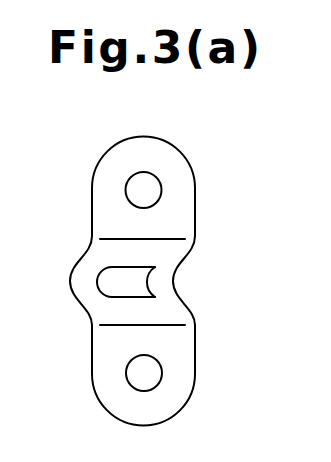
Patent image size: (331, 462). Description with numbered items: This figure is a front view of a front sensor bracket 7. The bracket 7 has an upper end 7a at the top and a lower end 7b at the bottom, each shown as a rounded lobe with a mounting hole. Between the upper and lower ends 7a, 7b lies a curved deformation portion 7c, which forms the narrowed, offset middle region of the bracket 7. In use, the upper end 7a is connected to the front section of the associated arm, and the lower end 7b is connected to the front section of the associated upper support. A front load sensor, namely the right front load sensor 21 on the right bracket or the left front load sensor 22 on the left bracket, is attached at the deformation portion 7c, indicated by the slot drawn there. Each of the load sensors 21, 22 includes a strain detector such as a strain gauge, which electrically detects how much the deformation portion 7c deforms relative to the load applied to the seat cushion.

The front sensor bracket 7 is at (163, 281).
The upper end 7a is at (196, 211).
The lower end 7b is at (196, 361).
The curved deformation portion 7c is at (80, 292).
The left front load sensor 22 is at (145, 265).
The right front load sensor 21 is at (147, 282).